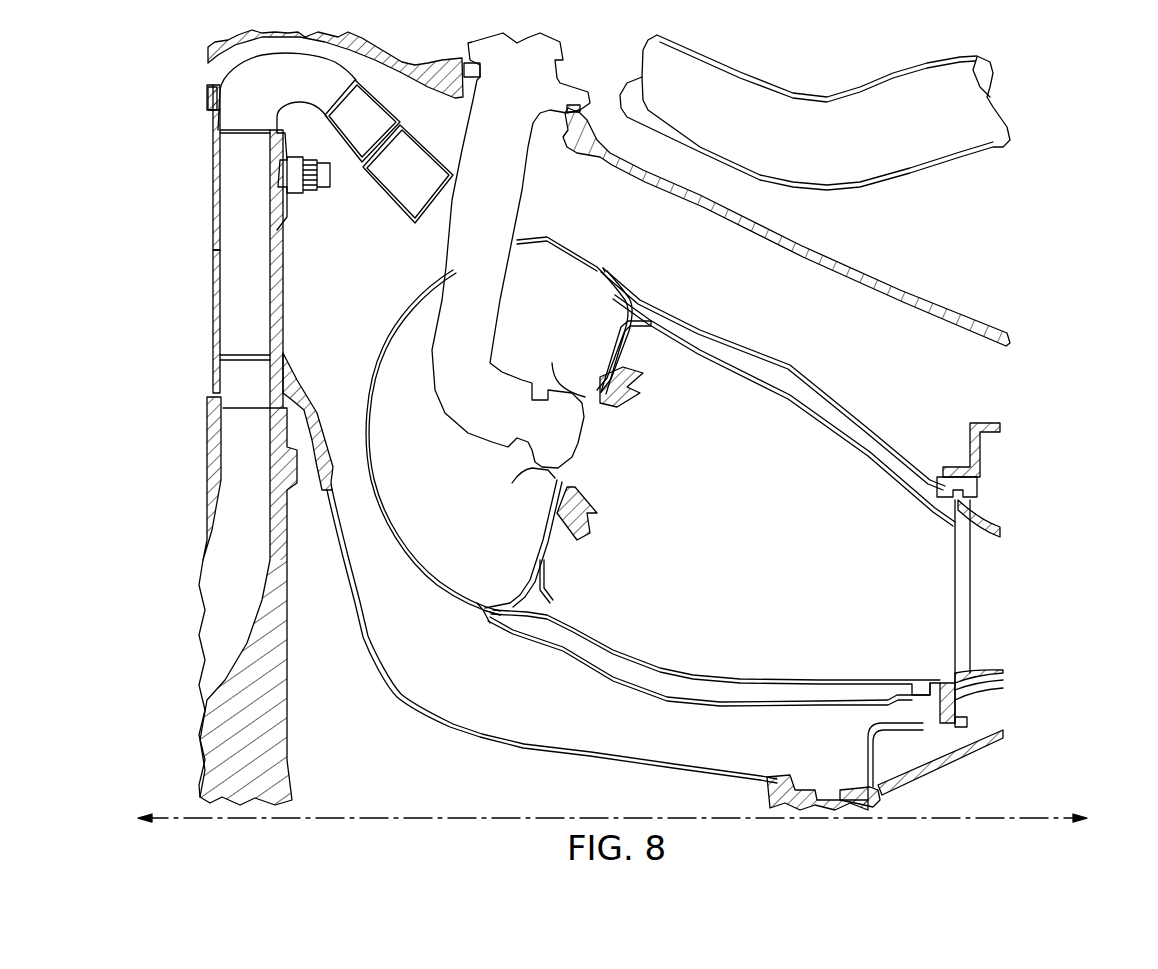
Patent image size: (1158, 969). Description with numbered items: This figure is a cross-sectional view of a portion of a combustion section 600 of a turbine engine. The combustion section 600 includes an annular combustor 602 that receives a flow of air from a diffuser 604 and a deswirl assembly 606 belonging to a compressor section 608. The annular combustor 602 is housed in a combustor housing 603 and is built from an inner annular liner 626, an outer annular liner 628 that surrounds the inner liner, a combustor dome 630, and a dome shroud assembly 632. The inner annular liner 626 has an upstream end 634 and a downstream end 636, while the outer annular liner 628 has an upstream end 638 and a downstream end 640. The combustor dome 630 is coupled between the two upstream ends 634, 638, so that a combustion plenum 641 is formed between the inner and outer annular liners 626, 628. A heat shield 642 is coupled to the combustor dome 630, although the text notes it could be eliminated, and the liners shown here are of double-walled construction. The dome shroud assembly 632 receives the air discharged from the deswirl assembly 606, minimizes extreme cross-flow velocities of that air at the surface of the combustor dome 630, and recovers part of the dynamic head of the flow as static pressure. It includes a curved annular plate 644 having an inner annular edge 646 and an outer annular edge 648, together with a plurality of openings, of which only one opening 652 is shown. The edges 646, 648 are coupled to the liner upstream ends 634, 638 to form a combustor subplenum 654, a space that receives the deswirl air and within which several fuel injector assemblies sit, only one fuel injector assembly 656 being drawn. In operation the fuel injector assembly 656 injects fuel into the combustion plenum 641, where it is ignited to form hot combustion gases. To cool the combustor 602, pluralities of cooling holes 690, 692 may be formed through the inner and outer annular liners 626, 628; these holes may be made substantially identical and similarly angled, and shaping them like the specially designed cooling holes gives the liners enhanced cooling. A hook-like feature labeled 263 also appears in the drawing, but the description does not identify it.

The combustion section 600 is at (1050, 160).
The annular combustor 602 is at (688, 285).
The combustor housing 603 is at (905, 293).
The diffuser 604 is at (213, 283).
The deswirl assembly 606 is at (356, 80).
The compressor section 608 is at (210, 210).
The inner annular liner 626 is at (667, 663).
The outer annular liner 628 is at (791, 395).
The combustor dome 630 is at (531, 556).
The dome shroud assembly 632 is at (397, 328).
The upstream end 634 is at (483, 617).
The downstream end 636 is at (947, 680).
The upstream end 638 is at (603, 273).
The downstream end 640 is at (943, 514).
The combustion plenum 641 is at (757, 547).
The heat shield 642 is at (627, 340).
The curved annular plate 644 is at (407, 544).
The inner annular edge 646 is at (487, 618).
The outer annular edge 648 is at (613, 273).
The opening 652 is at (443, 256).
The combustor subplenum 654 is at (481, 481).
The fuel injector assembly 656 is at (513, 192).
The cooling holes 690 is at (693, 672).
The cooling holes 692 is at (781, 371).
The seal hook 263 is at (580, 454).